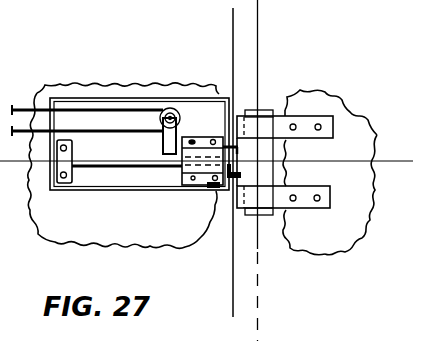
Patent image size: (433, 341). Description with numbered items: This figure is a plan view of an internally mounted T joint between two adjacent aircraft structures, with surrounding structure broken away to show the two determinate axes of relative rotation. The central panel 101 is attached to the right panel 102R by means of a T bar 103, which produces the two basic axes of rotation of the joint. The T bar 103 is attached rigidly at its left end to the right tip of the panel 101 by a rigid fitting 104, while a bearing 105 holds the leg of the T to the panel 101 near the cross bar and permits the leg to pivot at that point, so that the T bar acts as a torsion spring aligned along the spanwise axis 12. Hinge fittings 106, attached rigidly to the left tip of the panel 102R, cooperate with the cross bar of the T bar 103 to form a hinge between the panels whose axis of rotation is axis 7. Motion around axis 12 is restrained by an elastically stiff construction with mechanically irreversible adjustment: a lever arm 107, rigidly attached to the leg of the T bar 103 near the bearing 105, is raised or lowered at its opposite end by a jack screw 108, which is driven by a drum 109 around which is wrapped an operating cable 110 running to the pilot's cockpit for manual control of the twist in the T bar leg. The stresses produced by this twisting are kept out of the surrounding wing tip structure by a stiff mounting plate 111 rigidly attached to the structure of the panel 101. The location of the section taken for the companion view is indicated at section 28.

The axis 7 is at (258, 13).
The spanwise axis 12 is at (407, 160).
The section 28— 28 is at (226, 53).
The panel 101 is at (85, 87).
The panel 102R is at (330, 90).
The T bar 103 is at (136, 166).
The rigid fitting 104 is at (72, 176).
The bearing 105 is at (213, 192).
The hinge fittings 106 is at (297, 140).
The lever arm 107 is at (160, 147).
The jack screw 108 is at (160, 119).
The drum 109 is at (182, 119).
The operating cable 110 is at (98, 114).
The mounting plate 111 is at (113, 190).